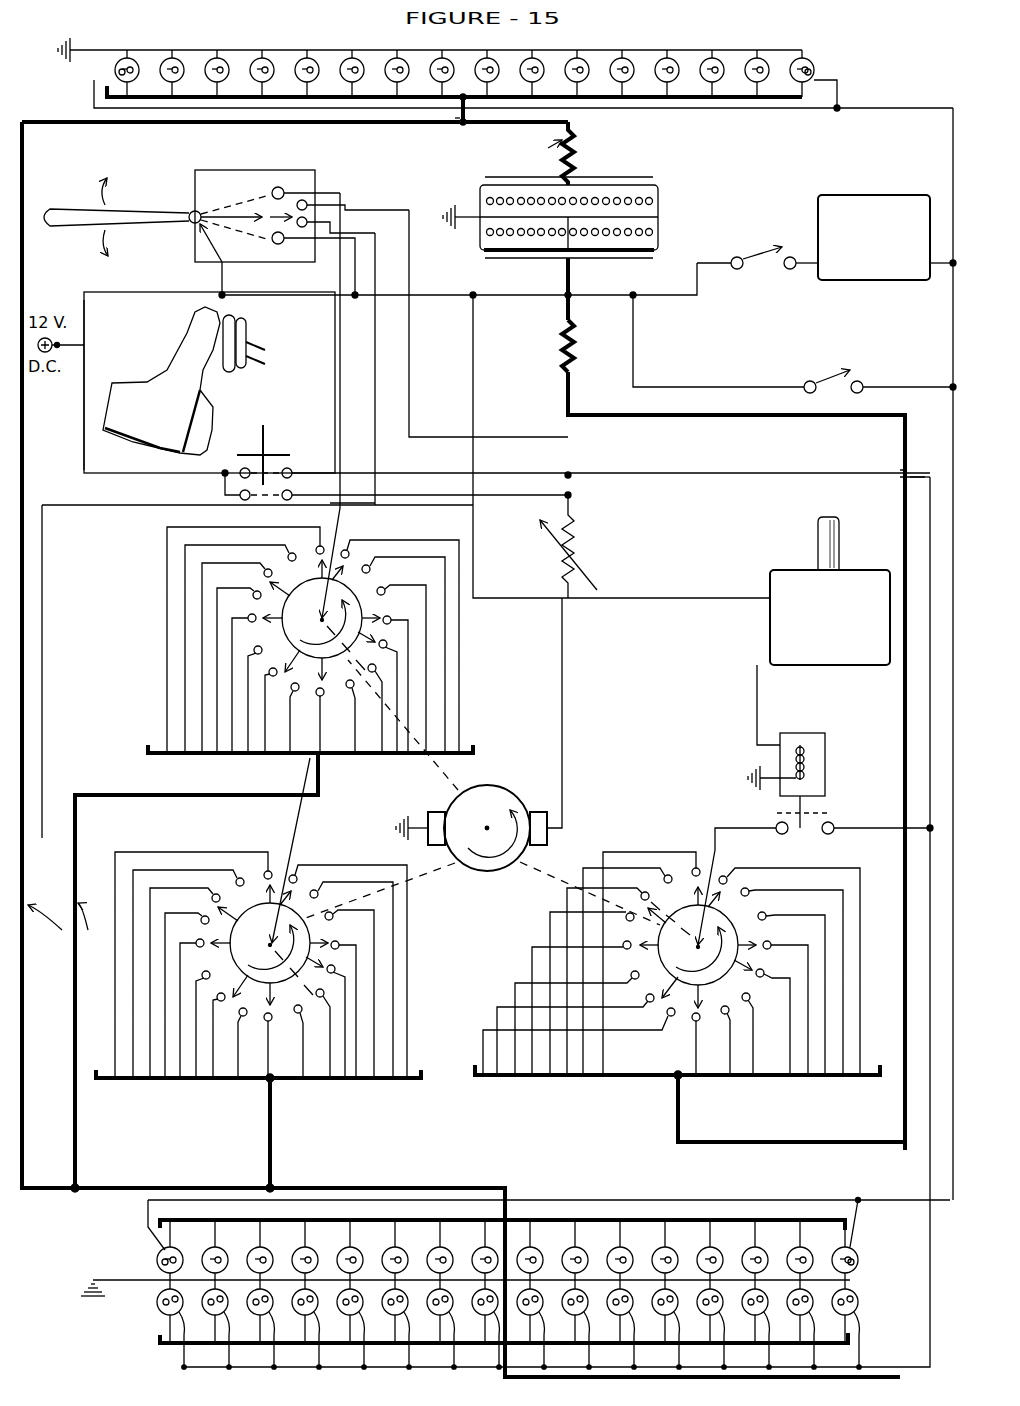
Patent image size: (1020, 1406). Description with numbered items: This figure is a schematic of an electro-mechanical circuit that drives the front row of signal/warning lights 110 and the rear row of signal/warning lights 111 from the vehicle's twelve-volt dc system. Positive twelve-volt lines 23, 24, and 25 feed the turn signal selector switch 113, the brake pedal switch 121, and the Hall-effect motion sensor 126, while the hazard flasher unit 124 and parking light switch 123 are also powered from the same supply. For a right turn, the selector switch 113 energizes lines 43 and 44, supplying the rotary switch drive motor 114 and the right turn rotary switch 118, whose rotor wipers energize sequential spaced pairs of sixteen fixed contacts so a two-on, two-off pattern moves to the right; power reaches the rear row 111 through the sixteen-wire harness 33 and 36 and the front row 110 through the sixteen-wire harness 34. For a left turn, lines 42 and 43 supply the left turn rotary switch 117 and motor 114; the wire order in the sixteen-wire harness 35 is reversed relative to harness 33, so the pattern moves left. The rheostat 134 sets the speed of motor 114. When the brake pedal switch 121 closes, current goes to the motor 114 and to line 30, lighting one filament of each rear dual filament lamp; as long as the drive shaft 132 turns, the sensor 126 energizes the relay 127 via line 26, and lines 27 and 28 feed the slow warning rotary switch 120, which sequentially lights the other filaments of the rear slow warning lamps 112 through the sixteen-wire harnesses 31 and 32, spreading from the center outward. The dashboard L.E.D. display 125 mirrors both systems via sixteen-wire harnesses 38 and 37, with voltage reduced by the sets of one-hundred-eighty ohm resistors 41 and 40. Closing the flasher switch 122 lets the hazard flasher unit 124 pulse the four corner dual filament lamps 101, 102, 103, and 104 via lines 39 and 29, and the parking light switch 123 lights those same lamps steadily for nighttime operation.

The positive twelve-volt line 23 is at (144, 302).
The positive twelve-volt line 24 is at (636, 350).
The positive twelve-volt line 25 is at (620, 598).
The line 26 is at (756, 692).
The line 27 is at (884, 828).
The line 28 is at (738, 840).
The line 29 is at (740, 1200).
The line 30 is at (830, 478).
The 16-wire harness 31 is at (862, 1134).
The 16-wire harness 32 is at (903, 1166).
The 16-wire harness 33 is at (270, 1164).
The 16-wire harness 34 is at (22, 878).
The 16-wire harness 35 is at (116, 794).
The 16-wire harness 36 is at (418, 1186).
The 16-wire harness 37 is at (565, 403).
The 16-wire harness 38 is at (490, 128).
The line 39 is at (953, 145).
The 180 ohm resistors 40 is at (580, 324).
The 180 ohm resistors 41 is at (574, 150).
The line 42 is at (330, 278).
The line 43 is at (412, 258).
The line 44 is at (372, 250).
The corner dual filament lamp 101 is at (118, 66).
The corner dual filament lamp 102 is at (812, 60).
The corner dual filament lamp 103 is at (862, 1268).
The corner dual filament lamp 104 is at (158, 1264).
The front row of signal/warning lights 110 is at (459, 70).
The rear row of signal/warning lights 111 is at (486, 1299).
The rear slow warning lamps 112 is at (504, 1338).
The turn signal selector switch 113 is at (355, 170).
The rotary switch drive motor 114 is at (502, 782).
The left turn rotary switch 117 is at (162, 602).
The right turn rotary switch 118 is at (286, 1083).
The slow warning rotary switch 120 is at (622, 1082).
The brake pedal switch 121 is at (268, 448).
The flasher switch 122 is at (735, 254).
The parking light switch 123 is at (808, 378).
The hazard flasher unit 124 is at (887, 237).
The dashboard L.E.D. display 125 is at (684, 180).
The Hall-effect motion sensor 126 is at (770, 620).
The relay 127 is at (760, 752).
The drive shaft 132 is at (818, 552).
The rheostat 134 is at (579, 558).